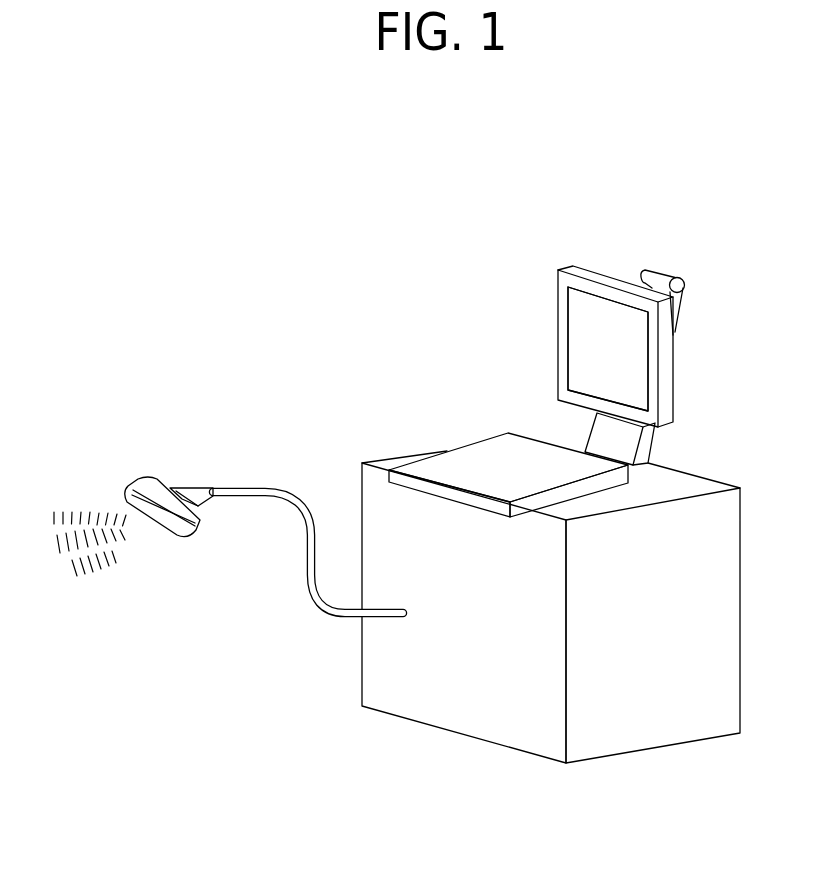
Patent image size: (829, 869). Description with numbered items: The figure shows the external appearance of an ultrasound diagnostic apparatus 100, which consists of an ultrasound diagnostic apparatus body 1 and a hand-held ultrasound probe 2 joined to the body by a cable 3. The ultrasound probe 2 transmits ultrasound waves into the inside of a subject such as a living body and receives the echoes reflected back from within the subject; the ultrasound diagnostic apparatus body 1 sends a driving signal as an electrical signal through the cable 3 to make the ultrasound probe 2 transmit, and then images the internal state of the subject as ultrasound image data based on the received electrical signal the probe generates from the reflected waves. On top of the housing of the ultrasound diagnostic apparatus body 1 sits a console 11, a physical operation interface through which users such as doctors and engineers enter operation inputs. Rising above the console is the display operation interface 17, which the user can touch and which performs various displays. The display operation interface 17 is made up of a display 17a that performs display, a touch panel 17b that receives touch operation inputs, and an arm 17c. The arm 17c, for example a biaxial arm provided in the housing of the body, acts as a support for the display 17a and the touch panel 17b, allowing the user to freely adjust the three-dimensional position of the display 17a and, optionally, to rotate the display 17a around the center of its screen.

The ultrasound diagnostic apparatus 100 is at (342, 234).
The ultrasound diagnostic apparatus body 1 is at (440, 730).
The ultrasound probe 2 is at (137, 478).
The cable 3 is at (310, 593).
The console 11 is at (477, 440).
The display operation interface 17 is at (627, 322).
The display 17a is at (597, 310).
The touch panel 17b is at (608, 349).
The arm 17c is at (671, 279).